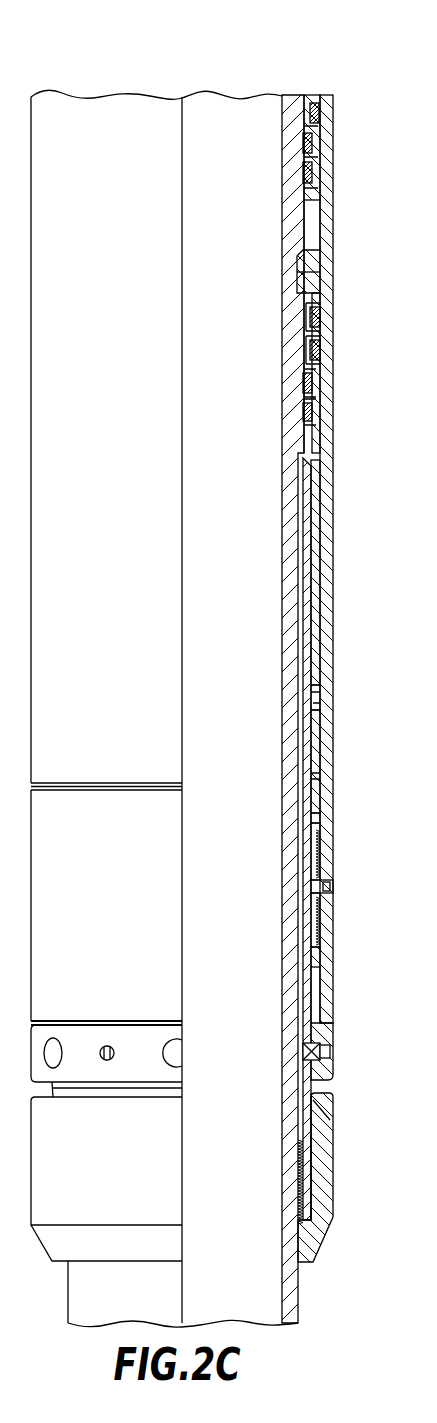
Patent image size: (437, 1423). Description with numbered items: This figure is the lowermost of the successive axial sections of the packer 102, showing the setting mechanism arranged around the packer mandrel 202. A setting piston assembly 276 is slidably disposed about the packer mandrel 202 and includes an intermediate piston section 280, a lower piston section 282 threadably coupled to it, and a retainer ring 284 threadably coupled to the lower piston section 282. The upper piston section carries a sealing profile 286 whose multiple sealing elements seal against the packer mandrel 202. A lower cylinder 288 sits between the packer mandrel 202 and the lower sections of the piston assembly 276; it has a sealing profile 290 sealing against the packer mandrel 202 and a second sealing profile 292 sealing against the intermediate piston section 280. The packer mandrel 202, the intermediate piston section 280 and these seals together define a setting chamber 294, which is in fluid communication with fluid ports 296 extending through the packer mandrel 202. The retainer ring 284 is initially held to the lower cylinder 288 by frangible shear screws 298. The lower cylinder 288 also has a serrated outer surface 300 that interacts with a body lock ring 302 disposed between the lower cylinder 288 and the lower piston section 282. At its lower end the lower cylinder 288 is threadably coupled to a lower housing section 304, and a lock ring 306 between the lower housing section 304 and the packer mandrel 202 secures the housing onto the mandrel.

The packer 102 is at (95, 72).
The packer mandrel 202 is at (288, 523).
The setting piston assembly 276 is at (338, 445).
The intermediate piston section 280 is at (323, 300).
The lower piston section 282 is at (325, 818).
The retainer ring 284 is at (325, 1025).
The sealing profile 286 is at (303, 156).
The lower cylinder 288 is at (307, 657).
The sealing profile 290 is at (325, 403).
The second sealing profile 292 is at (333, 332).
The setting chamber 294 is at (315, 213).
The fluid ports 296 is at (297, 272).
The shear screws 298 is at (327, 1063).
The serrated outer surface 300 is at (313, 757).
The body lock ring 302 is at (323, 855).
The lower housing section 304 is at (320, 1210).
The lock ring 306 is at (310, 1172).